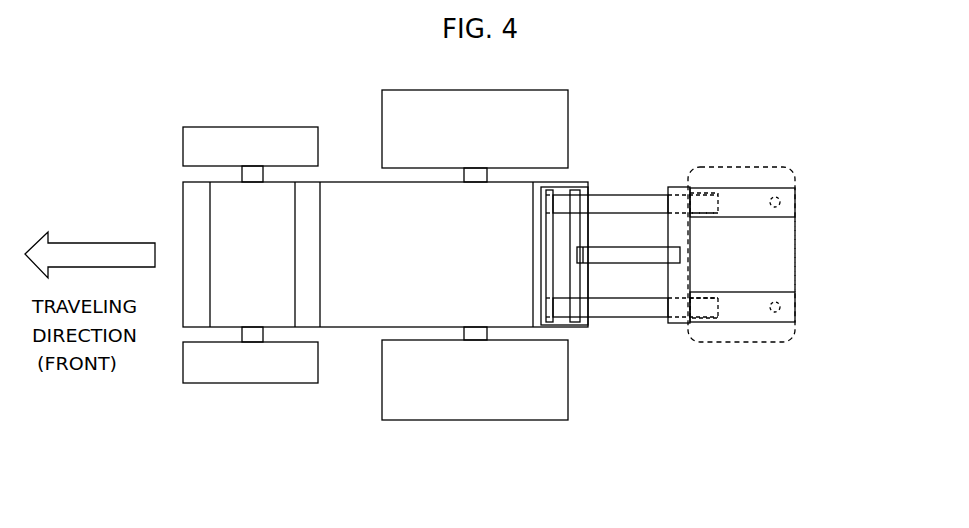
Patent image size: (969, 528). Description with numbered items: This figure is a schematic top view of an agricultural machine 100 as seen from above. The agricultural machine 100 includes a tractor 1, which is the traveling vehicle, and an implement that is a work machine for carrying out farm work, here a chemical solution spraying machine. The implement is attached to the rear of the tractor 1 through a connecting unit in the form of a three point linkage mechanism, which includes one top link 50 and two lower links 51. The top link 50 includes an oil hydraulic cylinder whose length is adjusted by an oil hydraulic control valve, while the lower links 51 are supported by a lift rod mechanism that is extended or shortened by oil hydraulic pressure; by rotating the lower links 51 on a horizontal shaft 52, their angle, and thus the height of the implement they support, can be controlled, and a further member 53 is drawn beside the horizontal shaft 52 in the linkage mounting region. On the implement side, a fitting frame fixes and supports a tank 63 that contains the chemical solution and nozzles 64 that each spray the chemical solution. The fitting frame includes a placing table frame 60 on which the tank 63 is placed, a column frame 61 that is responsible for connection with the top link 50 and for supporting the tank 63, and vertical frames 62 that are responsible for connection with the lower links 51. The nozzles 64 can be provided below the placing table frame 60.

The agricultural machine 100 is at (180, 118).
The tractor 1 is at (370, 193).
The top link 50 is at (612, 265).
The lower links 51 is at (633, 192).
The horizontal shaft 52 is at (578, 325).
The rear support plate 53 is at (547, 325).
The placing table frame 60 is at (755, 187).
The column frame 61 is at (690, 255).
The vertical frames 62 is at (705, 193).
The tank 63 is at (797, 258).
The nozzles 64 is at (797, 193).